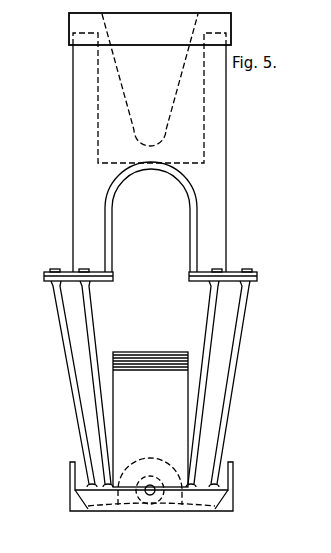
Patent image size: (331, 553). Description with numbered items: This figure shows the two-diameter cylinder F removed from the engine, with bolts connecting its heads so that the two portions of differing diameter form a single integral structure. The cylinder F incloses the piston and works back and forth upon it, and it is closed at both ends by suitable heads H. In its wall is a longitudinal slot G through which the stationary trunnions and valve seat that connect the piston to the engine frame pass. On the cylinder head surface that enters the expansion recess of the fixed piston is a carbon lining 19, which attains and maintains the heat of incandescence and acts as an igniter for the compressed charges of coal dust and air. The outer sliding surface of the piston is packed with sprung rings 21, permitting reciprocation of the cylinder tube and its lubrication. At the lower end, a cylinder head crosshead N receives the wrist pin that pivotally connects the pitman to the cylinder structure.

The cylinder head H is at (69, 28).
The carbon lining 19 is at (183, 163).
The cylinder F is at (226, 190).
The longitudinal slot G is at (113, 256).
The sprung rings 21 is at (190, 352).
The cylinder head crosshead N is at (235, 495).